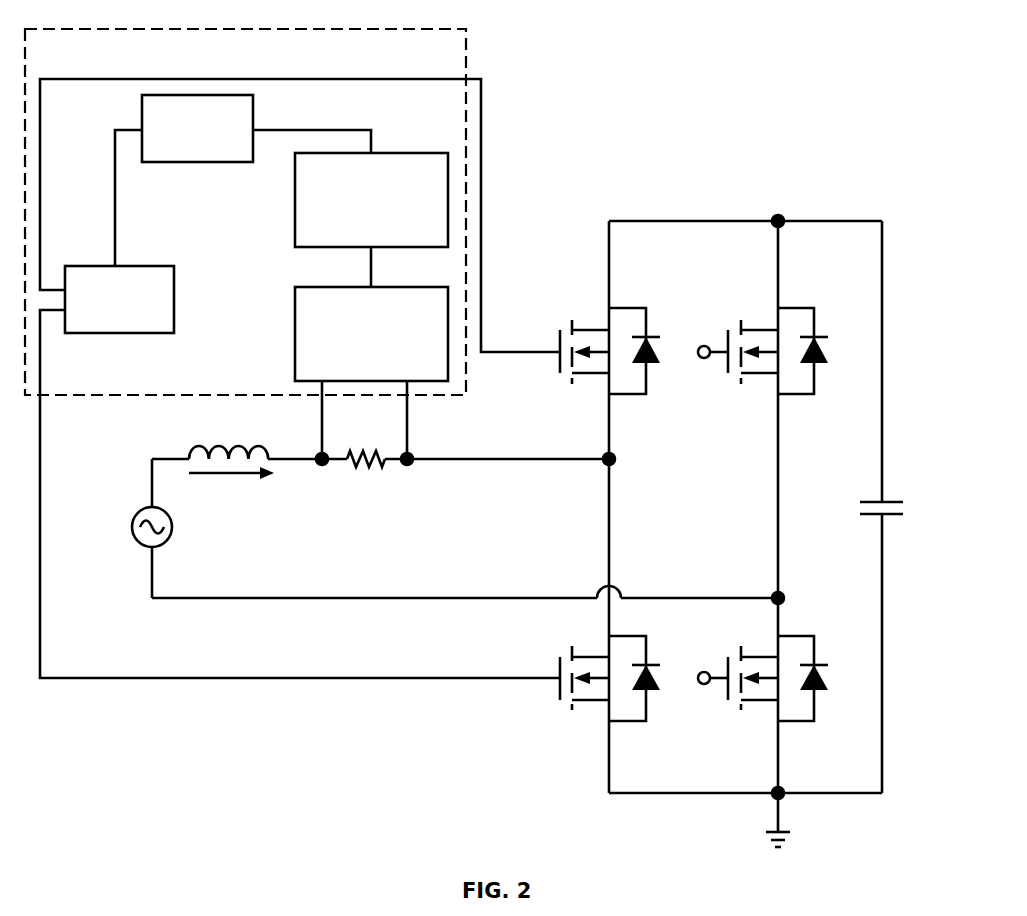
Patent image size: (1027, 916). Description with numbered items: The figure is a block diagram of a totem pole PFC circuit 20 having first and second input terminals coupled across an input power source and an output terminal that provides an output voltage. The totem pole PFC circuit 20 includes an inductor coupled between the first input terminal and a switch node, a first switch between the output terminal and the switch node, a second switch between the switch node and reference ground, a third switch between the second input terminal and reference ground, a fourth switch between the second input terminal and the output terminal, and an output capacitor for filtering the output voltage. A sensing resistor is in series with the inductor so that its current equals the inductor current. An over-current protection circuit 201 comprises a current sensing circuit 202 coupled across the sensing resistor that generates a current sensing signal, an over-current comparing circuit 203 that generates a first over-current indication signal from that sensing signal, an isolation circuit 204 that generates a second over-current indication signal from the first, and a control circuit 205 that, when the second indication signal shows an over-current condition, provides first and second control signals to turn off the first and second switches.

The totem pole PFC circuit 20 is at (798, 48).
The over-current protection circuit 201 is at (93, 55).
The current sensing circuit 202 is at (295, 343).
The over-current comparing circuit 203 is at (295, 232).
The isolation circuit 204 is at (192, 163).
The control circuit 205 is at (133, 333).